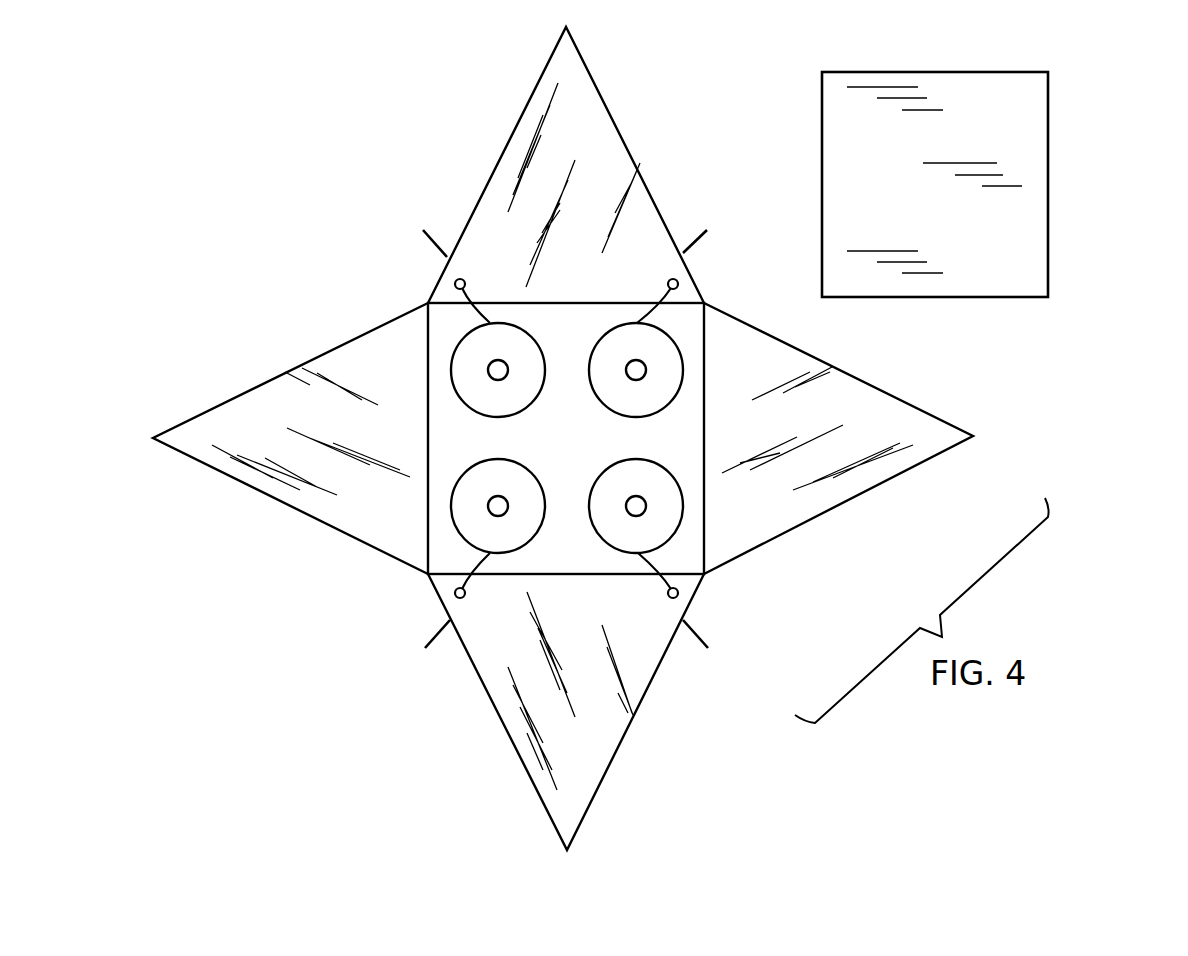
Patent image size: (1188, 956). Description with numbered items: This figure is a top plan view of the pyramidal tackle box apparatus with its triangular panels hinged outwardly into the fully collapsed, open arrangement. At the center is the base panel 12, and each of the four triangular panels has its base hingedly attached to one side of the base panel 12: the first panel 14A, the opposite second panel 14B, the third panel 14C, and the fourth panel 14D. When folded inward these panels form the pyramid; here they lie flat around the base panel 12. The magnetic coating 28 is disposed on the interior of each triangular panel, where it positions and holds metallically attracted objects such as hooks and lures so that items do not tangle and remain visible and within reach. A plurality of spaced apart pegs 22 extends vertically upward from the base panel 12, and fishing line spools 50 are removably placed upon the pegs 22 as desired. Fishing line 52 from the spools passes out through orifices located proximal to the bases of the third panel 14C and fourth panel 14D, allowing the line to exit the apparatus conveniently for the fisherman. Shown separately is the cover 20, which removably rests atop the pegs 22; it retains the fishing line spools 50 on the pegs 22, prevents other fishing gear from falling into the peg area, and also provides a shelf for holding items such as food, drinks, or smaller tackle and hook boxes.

The base panel 12 is at (704, 300).
The first panel 14A is at (595, 77).
The second panel 14B is at (633, 732).
The third panel 14C is at (938, 452).
The fourth panel 14D is at (233, 482).
The cover 20 is at (1038, 119).
The pegs 22 is at (645, 369).
The magnetic coating 28 is at (617, 150).
The fishing line spools 50 is at (508, 322).
The fishing line 52 is at (432, 243).